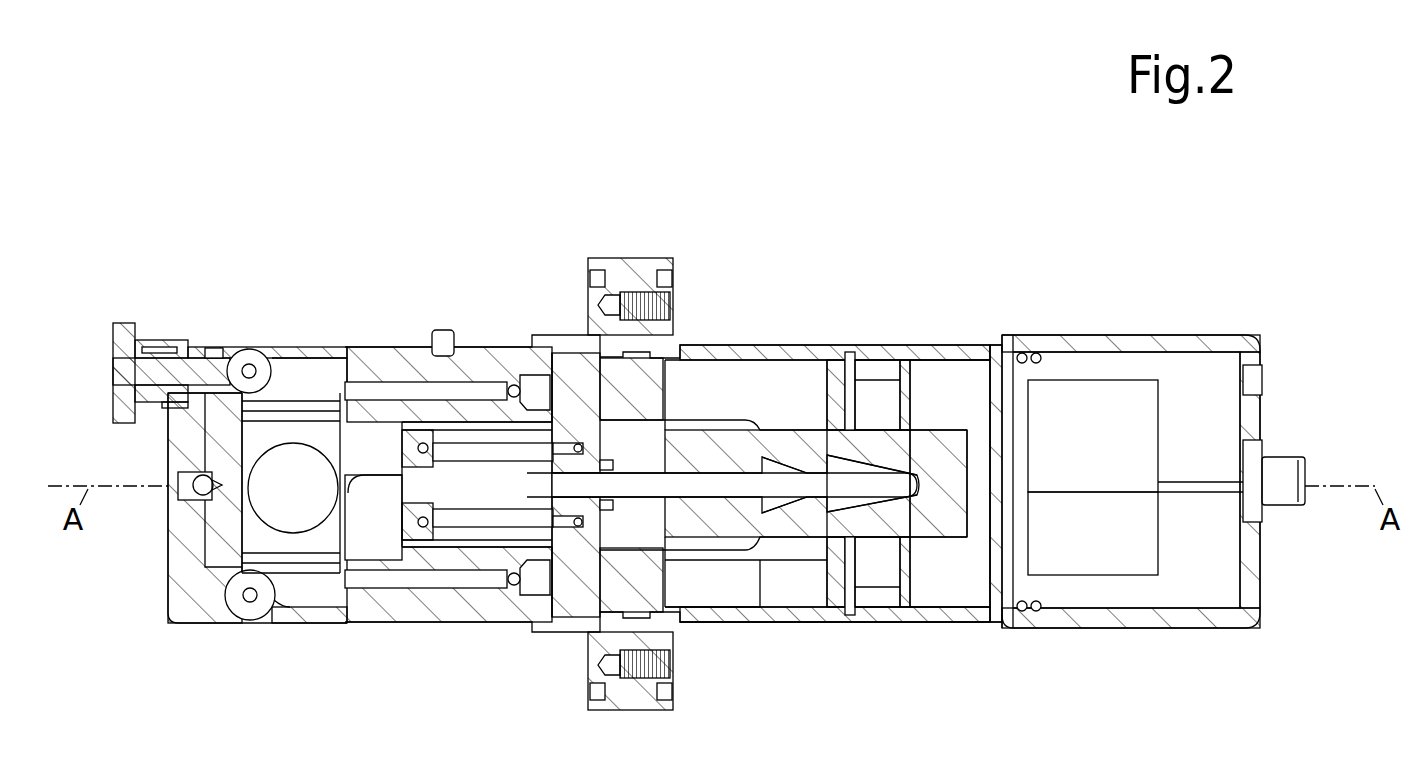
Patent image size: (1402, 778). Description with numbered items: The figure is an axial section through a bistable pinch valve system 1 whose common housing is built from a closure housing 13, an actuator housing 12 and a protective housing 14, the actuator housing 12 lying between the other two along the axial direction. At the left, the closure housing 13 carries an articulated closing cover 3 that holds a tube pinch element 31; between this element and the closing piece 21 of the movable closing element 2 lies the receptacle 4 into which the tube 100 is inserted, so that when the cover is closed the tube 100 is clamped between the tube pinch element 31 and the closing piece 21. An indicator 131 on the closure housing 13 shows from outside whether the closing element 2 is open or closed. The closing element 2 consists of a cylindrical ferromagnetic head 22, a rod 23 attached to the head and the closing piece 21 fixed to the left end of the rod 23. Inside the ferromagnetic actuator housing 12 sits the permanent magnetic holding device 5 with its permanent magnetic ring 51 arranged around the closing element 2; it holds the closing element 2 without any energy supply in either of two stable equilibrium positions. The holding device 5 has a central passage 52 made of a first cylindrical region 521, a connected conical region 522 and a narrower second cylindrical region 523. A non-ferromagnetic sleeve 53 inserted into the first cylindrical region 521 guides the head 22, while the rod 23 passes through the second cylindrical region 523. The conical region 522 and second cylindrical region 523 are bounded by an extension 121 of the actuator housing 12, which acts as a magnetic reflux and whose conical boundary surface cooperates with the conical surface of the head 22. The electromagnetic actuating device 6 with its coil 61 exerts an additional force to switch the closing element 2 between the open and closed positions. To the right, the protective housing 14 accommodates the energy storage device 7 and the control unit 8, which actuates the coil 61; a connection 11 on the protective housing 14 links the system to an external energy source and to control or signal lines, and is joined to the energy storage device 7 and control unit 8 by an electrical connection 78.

The pinch valve system 1 is at (1143, 215).
The closing element 2 is at (934, 418).
The closing cover 3 is at (168, 565).
The receptacle 4 is at (330, 445).
The permanent magnetic holding device 5 is at (866, 378).
The electromagnetic actuating device 6 is at (753, 622).
The energy storage device 7 is at (1085, 392).
The control unit 8 is at (1097, 550).
The connection 11 is at (1290, 507).
The actuator housing 12 is at (803, 380).
The closure housing 13 is at (365, 623).
The protective housing 14 is at (1180, 340).
The closing piece 21 is at (381, 430).
The head 22 is at (950, 540).
The rod 23 is at (640, 480).
The tube pinch element 31 is at (257, 428).
The permanent magnetic ring 51 is at (880, 397).
The central passage 52 is at (858, 583).
The sleeve 53 is at (750, 420).
The coil 61 is at (790, 575).
The electrical connection 78 is at (1207, 478).
The tube 100 is at (293, 517).
The extension 121 is at (718, 612).
The indicator 131 is at (452, 340).
The first cylindrical region 521 is at (813, 420).
The conical region 522 is at (777, 437).
The second cylindrical region 523 is at (700, 410).